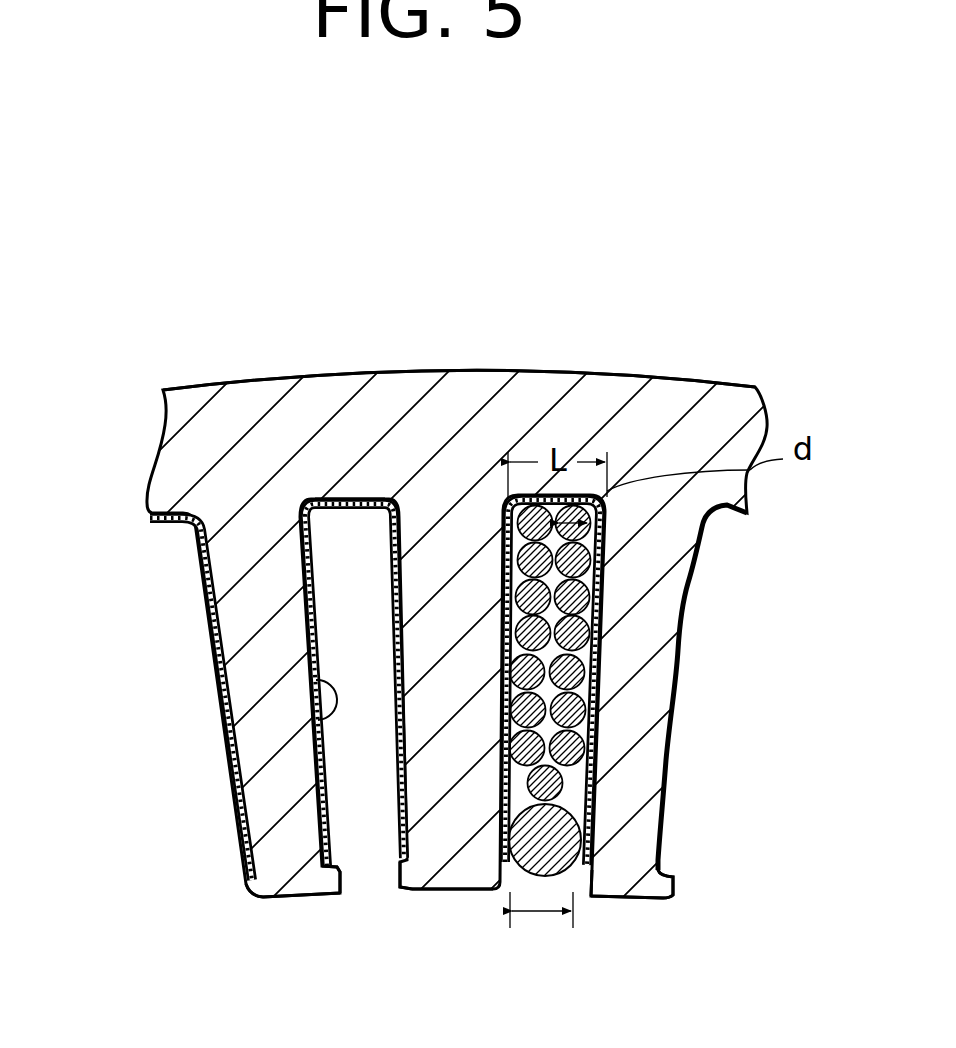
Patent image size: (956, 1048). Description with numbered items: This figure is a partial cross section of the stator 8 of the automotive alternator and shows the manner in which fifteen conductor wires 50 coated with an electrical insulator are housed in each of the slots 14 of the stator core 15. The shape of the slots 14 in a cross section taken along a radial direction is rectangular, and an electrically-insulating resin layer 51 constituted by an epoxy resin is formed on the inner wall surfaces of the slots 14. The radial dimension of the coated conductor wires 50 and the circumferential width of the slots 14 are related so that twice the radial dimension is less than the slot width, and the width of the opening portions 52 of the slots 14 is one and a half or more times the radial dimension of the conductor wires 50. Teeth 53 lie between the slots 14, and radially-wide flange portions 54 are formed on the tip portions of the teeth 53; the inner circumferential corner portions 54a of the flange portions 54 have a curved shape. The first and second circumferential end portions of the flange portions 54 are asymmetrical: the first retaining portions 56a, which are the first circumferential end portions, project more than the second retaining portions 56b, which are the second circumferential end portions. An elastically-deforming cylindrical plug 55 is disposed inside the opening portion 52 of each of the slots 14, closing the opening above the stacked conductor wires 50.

The seal assembly 8 is at (413, 272).
The seal body 15 is at (587, 393).
The resin lining 14 is at (322, 720).
The coil spring 50 is at (600, 645).
The spring wire 51 is at (593, 683).
The groove 52 is at (373, 877).
The leg portion 53 is at (250, 613).
The end face 54 is at (283, 900).
The spring opening 54a is at (510, 893).
The large diameter coil 55 is at (583, 833).
The inner corner 56a is at (337, 897).
The outer corner 56b is at (240, 890).